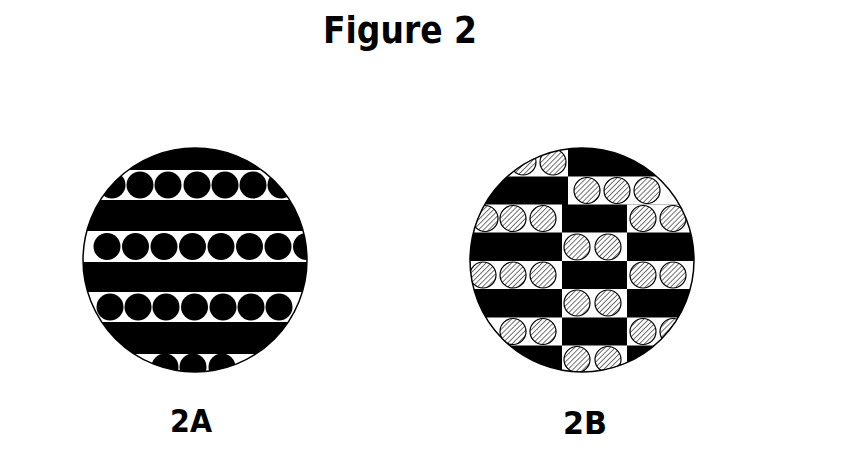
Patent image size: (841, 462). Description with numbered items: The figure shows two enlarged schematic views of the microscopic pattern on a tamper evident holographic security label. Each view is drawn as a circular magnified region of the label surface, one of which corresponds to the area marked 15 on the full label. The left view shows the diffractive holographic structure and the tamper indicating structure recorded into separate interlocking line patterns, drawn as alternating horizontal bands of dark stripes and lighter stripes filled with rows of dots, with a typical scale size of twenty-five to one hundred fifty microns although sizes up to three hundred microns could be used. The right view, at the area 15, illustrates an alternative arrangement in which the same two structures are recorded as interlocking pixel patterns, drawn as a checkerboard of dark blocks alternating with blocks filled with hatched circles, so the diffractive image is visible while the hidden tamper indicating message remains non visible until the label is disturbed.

The enlarged area 15 is at (597, 148).